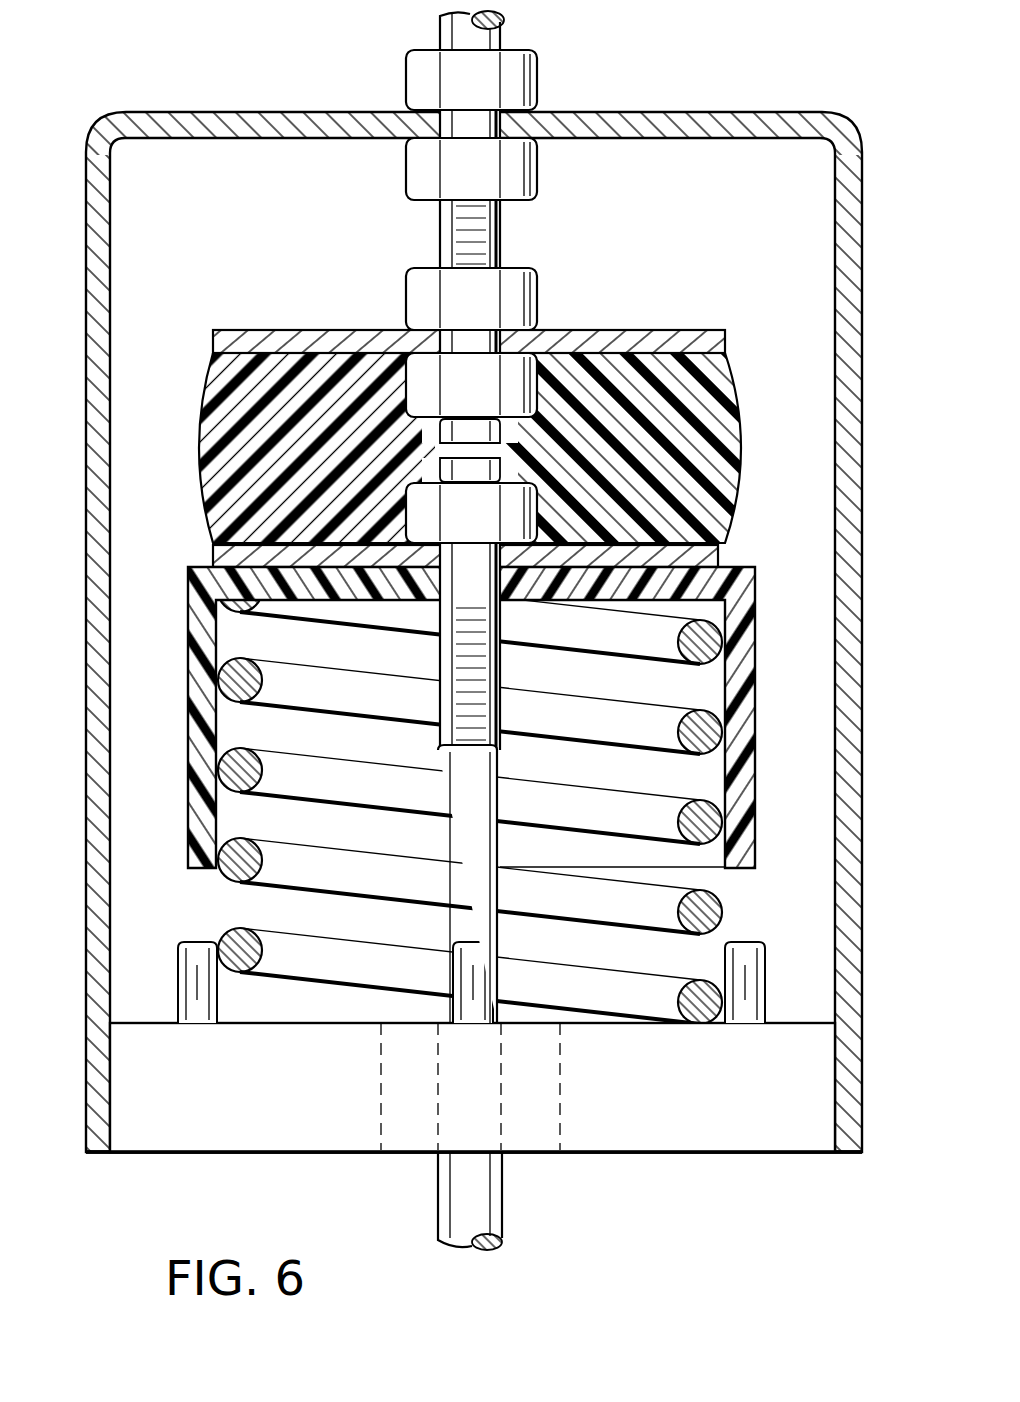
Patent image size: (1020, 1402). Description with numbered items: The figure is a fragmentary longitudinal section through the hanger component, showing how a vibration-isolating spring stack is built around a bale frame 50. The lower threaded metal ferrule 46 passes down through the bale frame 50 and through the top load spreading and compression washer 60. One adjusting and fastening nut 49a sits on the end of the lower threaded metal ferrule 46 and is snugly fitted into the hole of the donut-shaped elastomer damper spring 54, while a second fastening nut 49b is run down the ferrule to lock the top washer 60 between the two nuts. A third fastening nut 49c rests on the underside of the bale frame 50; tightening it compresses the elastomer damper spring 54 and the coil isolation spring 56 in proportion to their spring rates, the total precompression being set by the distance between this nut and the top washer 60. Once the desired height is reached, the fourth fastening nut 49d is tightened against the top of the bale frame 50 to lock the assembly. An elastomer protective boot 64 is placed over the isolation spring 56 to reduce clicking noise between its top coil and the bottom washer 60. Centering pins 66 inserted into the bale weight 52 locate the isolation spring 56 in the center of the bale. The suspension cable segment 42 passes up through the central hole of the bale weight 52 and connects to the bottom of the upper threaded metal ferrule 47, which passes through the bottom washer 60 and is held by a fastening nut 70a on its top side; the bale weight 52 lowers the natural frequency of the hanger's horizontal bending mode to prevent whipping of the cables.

The suspension cable segment 42 is at (503, 1200).
The lower threaded metal ferrule 46 is at (504, 22).
The upper threaded metal ferrule 47 is at (437, 737).
The adjusting and fastening nut 49a is at (540, 380).
The second fastening nut 49b is at (407, 300).
The third fastening nut 49c is at (407, 172).
The fourth fastening nut 49d is at (407, 73).
The bale frame 50 is at (642, 112).
The bale weight 52 is at (710, 1153).
The donut-shaped elastomer damper spring 54 is at (197, 432).
The isolation spring 56 is at (722, 905).
The load spreading and compression washer 60 is at (725, 342).
The elastomer protective boot 64 is at (757, 662).
The centering pins 66 is at (765, 957).
The fastening nut 70a is at (407, 517).